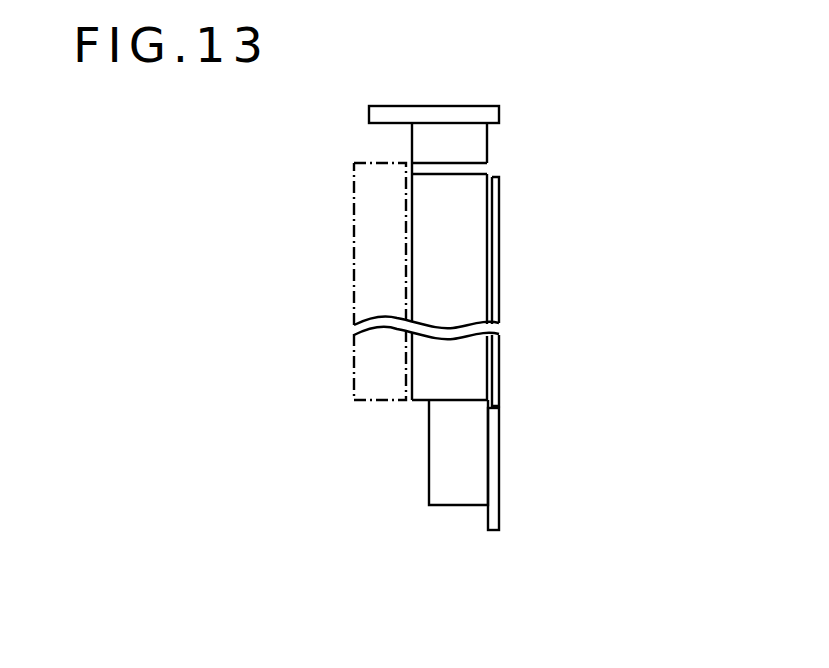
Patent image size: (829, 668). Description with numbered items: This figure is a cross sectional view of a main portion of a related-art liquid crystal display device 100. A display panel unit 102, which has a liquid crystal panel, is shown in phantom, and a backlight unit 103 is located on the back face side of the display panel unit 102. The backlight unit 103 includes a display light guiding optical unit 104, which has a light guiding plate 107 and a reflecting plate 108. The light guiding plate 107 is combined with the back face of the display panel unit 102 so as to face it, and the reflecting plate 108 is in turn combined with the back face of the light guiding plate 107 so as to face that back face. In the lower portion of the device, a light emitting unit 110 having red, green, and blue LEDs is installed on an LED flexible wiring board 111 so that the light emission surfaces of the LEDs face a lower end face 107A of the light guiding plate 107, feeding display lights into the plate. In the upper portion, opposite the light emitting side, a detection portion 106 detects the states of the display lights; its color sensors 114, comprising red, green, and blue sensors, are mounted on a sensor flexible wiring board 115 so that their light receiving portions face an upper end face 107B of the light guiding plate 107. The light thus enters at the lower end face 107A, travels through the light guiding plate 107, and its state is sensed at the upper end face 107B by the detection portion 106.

The liquid crystal display device 100 is at (498, 66).
The display panel unit 102 is at (353, 243).
The backlight unit 103 is at (550, 298).
The display light guiding optical unit 104 is at (528, 298).
The detection portion 106 is at (507, 127).
The light guiding plate 107 is at (504, 298).
The lower end face of the light guiding plate 107A is at (460, 400).
The upper end face of the light guiding plate 107B is at (468, 175).
The reflecting plate 108 is at (496, 276).
The light emitting unit 110 is at (438, 464).
The LED flexible wiring board 111 is at (494, 462).
The color sensors 114 is at (487, 143).
The sensor flexible wiring board 115 is at (499, 119).